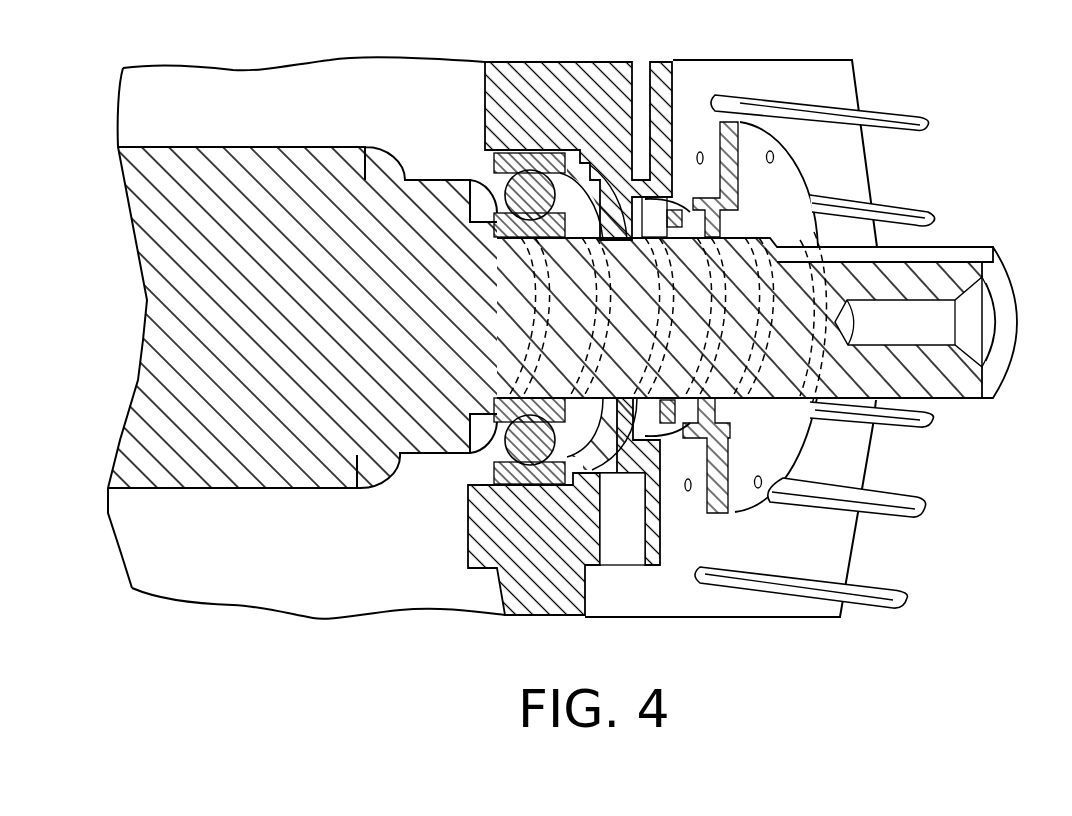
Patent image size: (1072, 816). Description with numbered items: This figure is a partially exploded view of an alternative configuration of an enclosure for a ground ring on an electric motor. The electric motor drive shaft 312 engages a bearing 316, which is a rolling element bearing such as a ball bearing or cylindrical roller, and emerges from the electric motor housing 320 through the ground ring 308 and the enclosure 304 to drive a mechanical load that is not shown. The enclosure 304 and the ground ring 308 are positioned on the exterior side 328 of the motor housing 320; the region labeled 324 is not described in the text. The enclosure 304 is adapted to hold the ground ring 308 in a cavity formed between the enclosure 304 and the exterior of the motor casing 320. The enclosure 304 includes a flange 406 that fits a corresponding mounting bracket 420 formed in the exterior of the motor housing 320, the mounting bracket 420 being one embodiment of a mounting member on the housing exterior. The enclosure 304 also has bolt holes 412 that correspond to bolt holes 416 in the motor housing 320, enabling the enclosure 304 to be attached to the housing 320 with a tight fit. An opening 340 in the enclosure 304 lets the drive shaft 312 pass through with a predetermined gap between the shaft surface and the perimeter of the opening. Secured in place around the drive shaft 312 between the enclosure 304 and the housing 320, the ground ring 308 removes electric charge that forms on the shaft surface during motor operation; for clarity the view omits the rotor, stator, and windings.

The enclosure 304 is at (790, 186).
The ground ring 308 is at (631, 185).
The electric motor drive shaft 312 is at (313, 146).
The bearing 316 is at (484, 165).
The electric motor housing 320 is at (850, 473).
The housing 324 is at (376, 95).
The exterior side 328 is at (960, 93).
The opening 340 is at (735, 328).
The flange 406 is at (645, 424).
The bolt holes 412 is at (774, 157).
The bolt holes 416 is at (702, 152).
The mounting bracket 420 is at (605, 392).